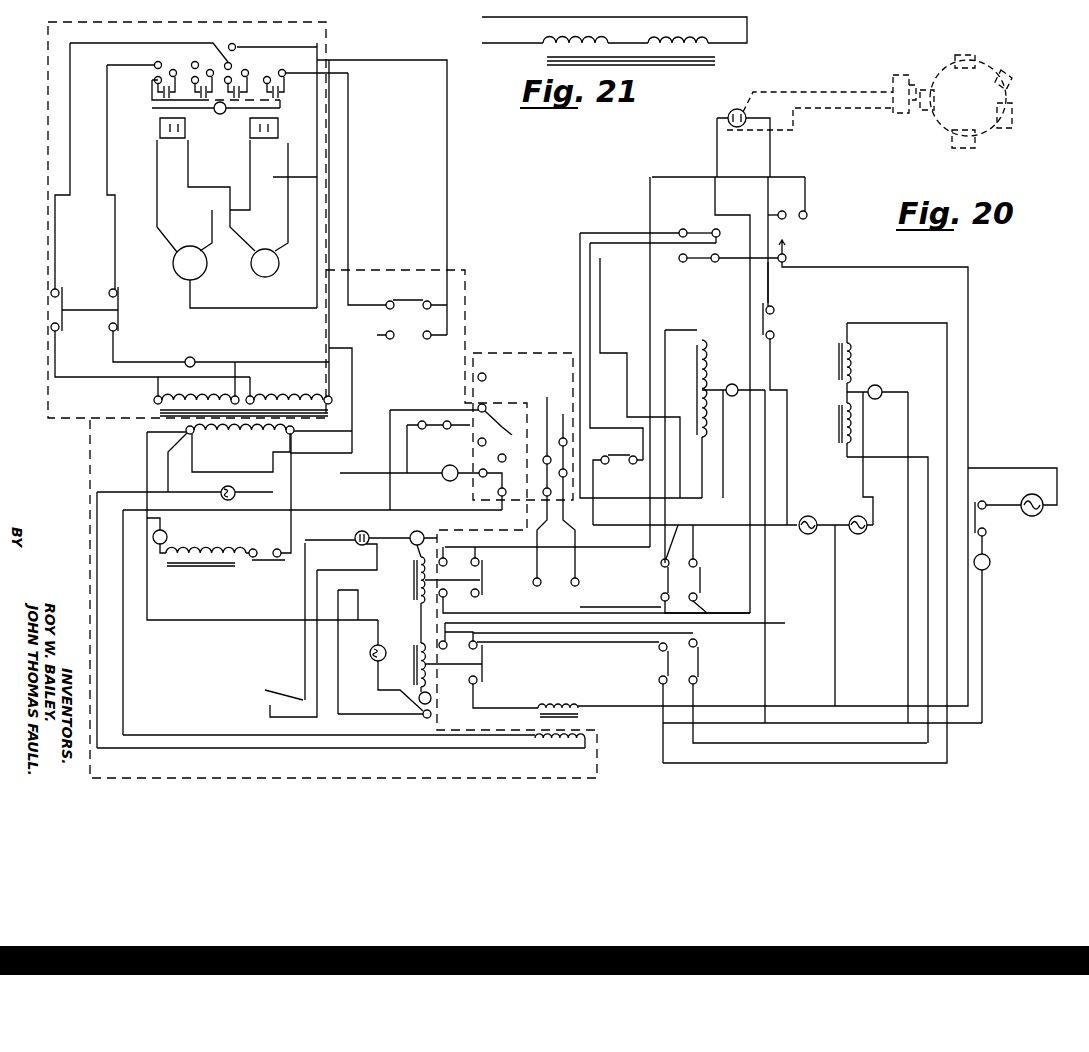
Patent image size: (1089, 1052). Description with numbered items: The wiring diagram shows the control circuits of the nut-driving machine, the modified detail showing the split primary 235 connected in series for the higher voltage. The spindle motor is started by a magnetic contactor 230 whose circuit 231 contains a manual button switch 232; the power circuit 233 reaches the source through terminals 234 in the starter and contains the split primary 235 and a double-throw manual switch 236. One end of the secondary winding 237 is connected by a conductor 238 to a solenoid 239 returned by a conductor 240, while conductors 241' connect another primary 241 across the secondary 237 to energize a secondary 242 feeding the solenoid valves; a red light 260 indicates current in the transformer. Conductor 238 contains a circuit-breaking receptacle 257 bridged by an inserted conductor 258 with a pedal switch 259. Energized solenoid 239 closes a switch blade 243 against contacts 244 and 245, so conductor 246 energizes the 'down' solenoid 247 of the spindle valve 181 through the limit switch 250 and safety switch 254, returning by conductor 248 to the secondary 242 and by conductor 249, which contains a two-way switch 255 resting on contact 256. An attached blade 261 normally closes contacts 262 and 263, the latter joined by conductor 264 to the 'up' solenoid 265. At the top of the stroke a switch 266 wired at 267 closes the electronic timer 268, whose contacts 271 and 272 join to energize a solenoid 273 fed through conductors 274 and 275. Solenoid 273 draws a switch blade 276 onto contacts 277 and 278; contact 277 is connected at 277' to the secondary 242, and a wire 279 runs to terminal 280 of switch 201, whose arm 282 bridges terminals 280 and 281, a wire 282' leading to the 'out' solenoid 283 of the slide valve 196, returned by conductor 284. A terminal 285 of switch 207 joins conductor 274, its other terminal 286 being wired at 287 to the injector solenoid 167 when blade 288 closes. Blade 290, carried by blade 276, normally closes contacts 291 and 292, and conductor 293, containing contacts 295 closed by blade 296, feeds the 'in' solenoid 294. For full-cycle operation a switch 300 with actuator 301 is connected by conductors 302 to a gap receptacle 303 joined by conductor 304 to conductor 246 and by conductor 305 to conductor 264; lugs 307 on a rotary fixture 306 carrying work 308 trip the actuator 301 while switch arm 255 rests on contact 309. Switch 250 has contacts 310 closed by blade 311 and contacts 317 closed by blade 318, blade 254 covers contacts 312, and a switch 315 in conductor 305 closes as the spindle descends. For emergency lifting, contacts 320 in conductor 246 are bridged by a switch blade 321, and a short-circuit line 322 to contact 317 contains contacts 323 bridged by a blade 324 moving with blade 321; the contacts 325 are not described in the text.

In FIG. 20, the injector operating solenoid 167 is at (212, 551).
In FIG. 20, the spindle valve 181 is at (738, 371).
In FIG. 20, the slide-operating valve 196 is at (901, 366).
In FIG. 20, the switch 201 is at (738, 688).
In FIG. 20, the switch 207 is at (241, 571).
In FIG. 20, the starting switch or magnetic contactor 230 is at (234, 171).
In FIG. 20, the circuit of the starter 231 is at (446, 190).
In FIG. 20, the manual button switch 232 is at (391, 301).
In FIG. 20, the power circuit 233 is at (112, 241).
In FIG. 20, the terminals 234 is at (154, 74).
In FIG. 21, the split primary 235 is at (545, 47).
In FIG. 20, the split primary 235 is at (276, 398).
In FIG. 20, the double-throw manual switch 236 is at (120, 306).
In FIG. 20, the secondary winding 237 is at (262, 446).
In FIG. 20, the conductor 238 is at (338, 494).
In FIG. 20, the solenoid 239 is at (414, 582).
In FIG. 20, the conductor 240 is at (228, 621).
In FIG. 20, the primary 241 is at (342, 754).
In FIG. 20, the conductors 241' is at (185, 604).
In FIG. 20, the secondary 242 is at (548, 706).
In FIG. 20, the switch blade 243 is at (484, 577).
In FIG. 20, the contact 244 is at (480, 596).
In FIG. 20, the contact 245 is at (478, 559).
In FIG. 20, the conductor 246 is at (580, 268).
In FIG. 20, the 'down' solenoid 247 is at (709, 437).
In FIG. 20, the conductor 248 is at (787, 392).
In FIG. 20, the conductor 249 is at (859, 274).
In FIG. 20, the limit switch 250 is at (745, 578).
In FIG. 20, the safety switch 254 is at (607, 446).
In FIG. 20, the manual two-way switch 255 is at (785, 251).
In FIG. 20, the contact 256 is at (807, 215).
In FIG. 20, the circuit-breaking receptacle 257 is at (376, 552).
In FIG. 20, the inserted conductor 258 is at (305, 655).
In FIG. 20, the pedal switch 259 is at (287, 695).
In FIG. 20, the red light 260 is at (233, 490).
In FIG. 20, the blade 261 is at (457, 589).
In FIG. 20, the contact 262 is at (457, 556).
In FIG. 20, the contact 263 is at (443, 601).
In FIG. 20, the conductor 264 is at (560, 613).
In FIG. 20, the 'up' solenoid 265 is at (705, 343).
In FIG. 20, the switch 266 is at (574, 590).
In FIG. 20, the timer wiring 267 is at (556, 487).
In FIG. 20, the electronic timer 268 is at (500, 360).
In FIG. 20, the timer contact 271 is at (484, 404).
In FIG. 20, the timer contact 272 is at (496, 444).
In FIG. 20, the solenoid 273 is at (414, 674).
In FIG. 20, the conductor 274 is at (329, 510).
In FIG. 20, the conductor 275 is at (405, 410).
In FIG. 20, the switch blade 276 is at (484, 660).
In FIG. 20, the contact 277 is at (494, 679).
In FIG. 20, the conductor 277' is at (505, 699).
In FIG. 20, the contact 278 is at (477, 645).
In FIG. 20, the wire 279 is at (546, 643).
In FIG. 20, the terminal 280 is at (688, 654).
In FIG. 20, the terminal 281 is at (691, 682).
In FIG. 20, the arm 282 is at (810, 695).
In FIG. 20, the conductor 282' is at (887, 589).
In FIG. 20, the 'out' solenoid 283 is at (844, 447).
In FIG. 20, the conductor 284 is at (909, 417).
In FIG. 20, the terminal 285 is at (279, 558).
In FIG. 20, the terminal 286 is at (255, 560).
In FIG. 20, the wire 287 is at (224, 552).
In FIG. 20, the blade 288 is at (256, 550).
In FIG. 20, the blade 290 is at (453, 658).
In FIG. 20, the contact 291 is at (432, 702).
In FIG. 20, the contact 292 is at (444, 644).
In FIG. 20, the conductor 293 is at (507, 613).
In FIG. 20, the 'in' solenoid 294 is at (842, 340).
In FIG. 20, the contacts 295 is at (838, 565).
In FIG. 20, the blade 296 is at (667, 666).
In FIG. 20, the full cycle switch 300 is at (888, 75).
In FIG. 20, the actuator 301 is at (925, 112).
In FIG. 20, the conductors 302 is at (859, 92).
In FIG. 20, the gap receptacle 303 is at (749, 114).
In FIG. 20, the conductor 304 is at (720, 158).
In FIG. 20, the conductor 305 is at (771, 146).
In FIG. 20, the indexed or rotary fixture 306 is at (1006, 73).
In FIG. 20, the lugs 307 is at (970, 55).
In FIG. 20, the piece of work 308 is at (1005, 128).
In FIG. 20, the contact 309 is at (790, 203).
In FIG. 20, the contacts 310 is at (694, 557).
In FIG. 20, the blade 311 is at (704, 582).
In FIG. 20, the contacts 312 is at (605, 465).
In FIG. 20, the normally open switch 315 is at (773, 310).
In FIG. 20, the contacts 317 is at (663, 565).
In FIG. 20, the blade 318 is at (668, 582).
In FIG. 20, the spaced contacts 320 is at (681, 229).
In FIG. 20, the switch blade 321 is at (697, 231).
In FIG. 20, the short-circuit line 322 is at (600, 337).
In FIG. 20, the spaced contacts 323 is at (681, 262).
In FIG. 20, the blade 324 is at (697, 268).
In FIG. 20, the contact 325 is at (717, 262).